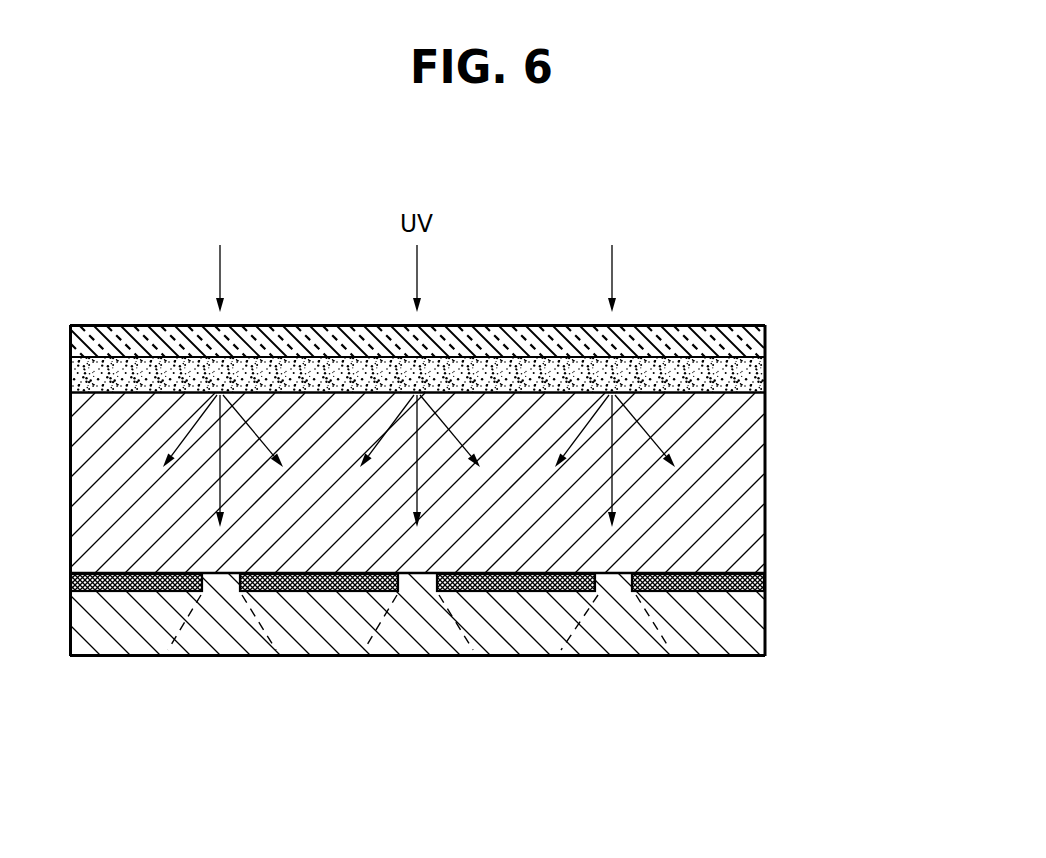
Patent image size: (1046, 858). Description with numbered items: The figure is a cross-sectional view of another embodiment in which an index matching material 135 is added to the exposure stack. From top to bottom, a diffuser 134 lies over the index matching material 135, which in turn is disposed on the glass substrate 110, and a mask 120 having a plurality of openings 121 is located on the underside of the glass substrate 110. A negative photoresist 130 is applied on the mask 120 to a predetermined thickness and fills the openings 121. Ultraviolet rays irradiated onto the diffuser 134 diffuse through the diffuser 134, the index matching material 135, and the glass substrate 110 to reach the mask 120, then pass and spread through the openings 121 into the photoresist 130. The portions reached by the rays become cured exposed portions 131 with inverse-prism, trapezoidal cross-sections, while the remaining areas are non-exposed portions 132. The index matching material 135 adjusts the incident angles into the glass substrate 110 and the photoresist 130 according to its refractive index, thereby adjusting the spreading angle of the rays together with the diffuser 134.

The glass substrate 110 is at (752, 484).
The mask 120 is at (766, 583).
The openings 121 is at (232, 573).
The photoresist 130 is at (782, 624).
The exposed portions 131 is at (617, 640).
The non-exposed portions 132 is at (707, 645).
The diffuser 134 is at (766, 336).
The index matching material 135 is at (766, 379).